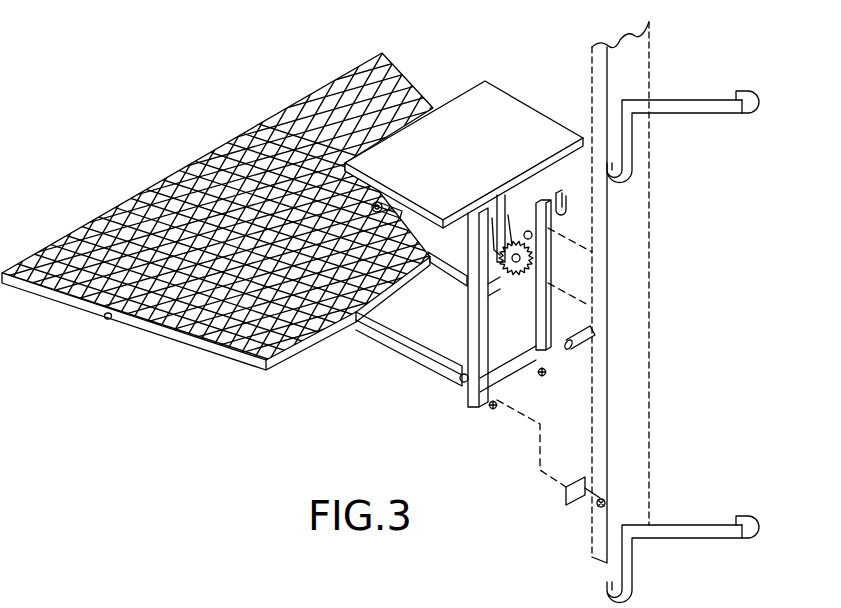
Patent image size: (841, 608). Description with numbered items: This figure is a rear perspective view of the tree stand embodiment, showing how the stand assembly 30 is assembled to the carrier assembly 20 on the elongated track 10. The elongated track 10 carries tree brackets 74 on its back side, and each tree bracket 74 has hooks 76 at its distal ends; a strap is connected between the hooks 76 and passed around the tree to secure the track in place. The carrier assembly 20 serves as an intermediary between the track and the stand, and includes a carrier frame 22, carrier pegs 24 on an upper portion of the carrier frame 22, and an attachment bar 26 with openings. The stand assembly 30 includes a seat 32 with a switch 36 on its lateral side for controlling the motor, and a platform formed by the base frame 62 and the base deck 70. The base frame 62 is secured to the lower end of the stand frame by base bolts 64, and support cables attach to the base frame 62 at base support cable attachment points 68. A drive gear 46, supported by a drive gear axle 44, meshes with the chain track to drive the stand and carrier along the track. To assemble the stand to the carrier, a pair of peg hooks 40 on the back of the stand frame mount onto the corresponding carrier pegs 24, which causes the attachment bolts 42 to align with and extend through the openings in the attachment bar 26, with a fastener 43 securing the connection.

The elongated track 10 is at (672, 66).
The carrier assembly 20 is at (540, 485).
The carrier frame 22 is at (590, 472).
The carrier pegs 24 is at (596, 340).
The attachment bar 26 is at (578, 498).
The stand assembly 30 is at (510, 63).
The seat 32 is at (481, 92).
The switch 36 is at (367, 212).
The peg hooks 40 is at (550, 205).
The attachment bolts 42 is at (494, 409).
The fastener 43 is at (605, 502).
The drive gear axle 44 is at (492, 258).
The drive gear 46 is at (532, 266).
The base frame 62 is at (62, 300).
The base bolts 64 is at (458, 386).
The base support cable attachment points 68 is at (107, 320).
The base deck 70 is at (282, 122).
The tree brackets 74 is at (680, 115).
The hooks 76 is at (752, 90).